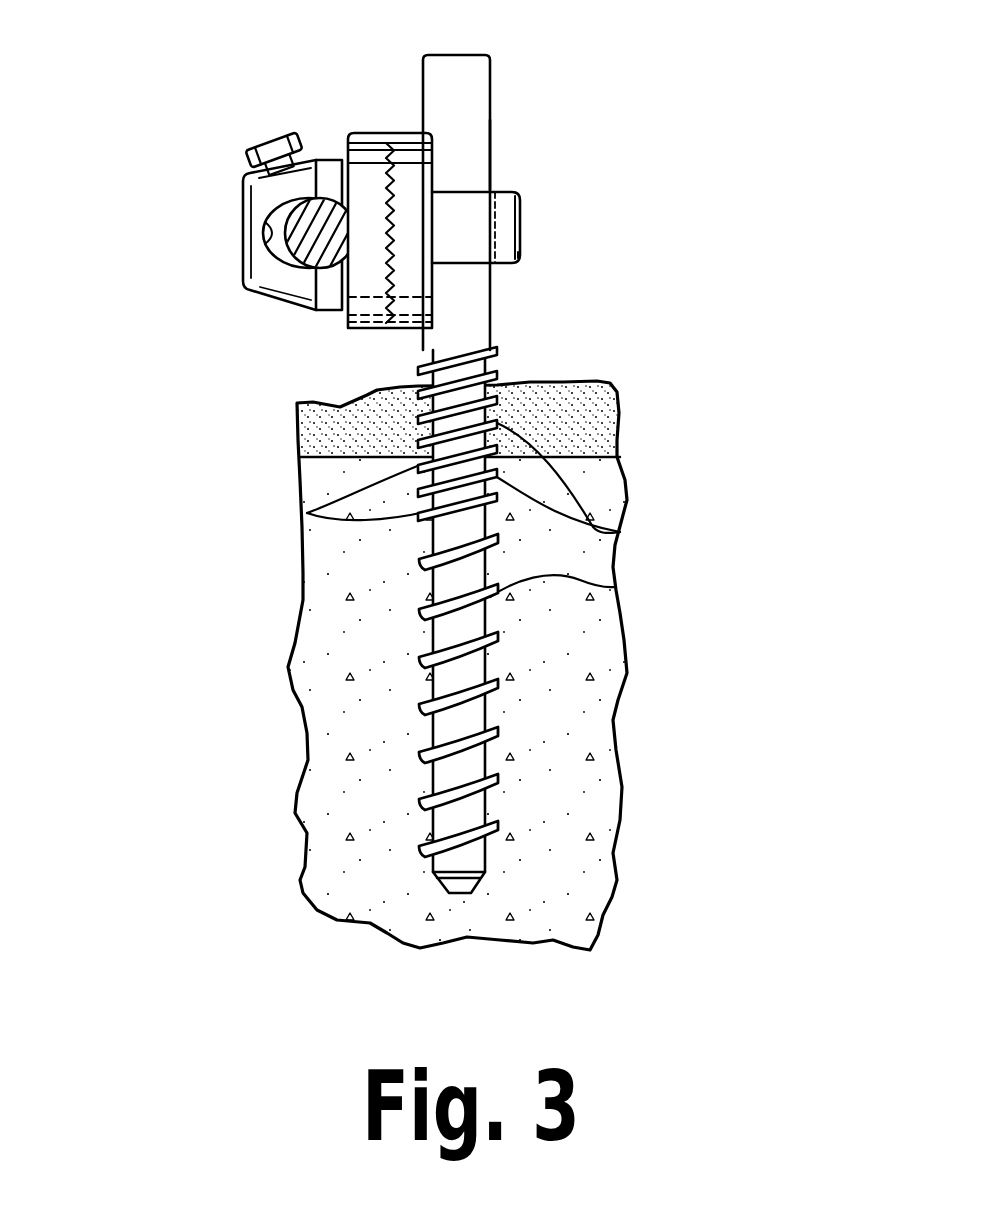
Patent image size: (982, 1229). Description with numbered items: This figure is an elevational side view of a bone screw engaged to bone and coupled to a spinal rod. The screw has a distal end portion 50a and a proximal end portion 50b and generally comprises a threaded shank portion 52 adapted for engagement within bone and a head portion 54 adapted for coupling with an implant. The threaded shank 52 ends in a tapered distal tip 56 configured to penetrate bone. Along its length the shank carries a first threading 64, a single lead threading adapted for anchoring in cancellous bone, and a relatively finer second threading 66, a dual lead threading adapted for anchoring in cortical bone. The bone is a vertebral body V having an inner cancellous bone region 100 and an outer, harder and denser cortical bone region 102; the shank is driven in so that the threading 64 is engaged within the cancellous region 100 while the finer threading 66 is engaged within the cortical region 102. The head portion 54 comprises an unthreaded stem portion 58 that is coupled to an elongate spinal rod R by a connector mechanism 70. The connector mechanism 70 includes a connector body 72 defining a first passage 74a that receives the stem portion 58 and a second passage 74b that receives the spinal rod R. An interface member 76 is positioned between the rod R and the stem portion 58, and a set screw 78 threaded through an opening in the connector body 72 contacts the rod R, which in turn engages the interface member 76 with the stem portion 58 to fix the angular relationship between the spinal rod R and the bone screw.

The distal end portion 50a is at (532, 877).
The proximal end portion 50b is at (361, 383).
The threaded shank portion 52 is at (443, 664).
The head portion 54 is at (535, 202).
The distal tip 56 is at (440, 880).
The unthreaded stem portion 58 is at (490, 157).
The first threading 64 is at (307, 513).
The second threading 66 is at (620, 532).
The connector mechanism 70 is at (389, 171).
The connector body 72 is at (520, 252).
The first passage 74a is at (494, 190).
The second passage 74b is at (300, 248).
The interface member 76 is at (425, 132).
The set screw 78 is at (270, 163).
The spinal rod R is at (300, 248).
The vertebral body V is at (462, 665).
The inner cancellous bone region 100 is at (602, 653).
The outer cortical bone region 102 is at (614, 430).